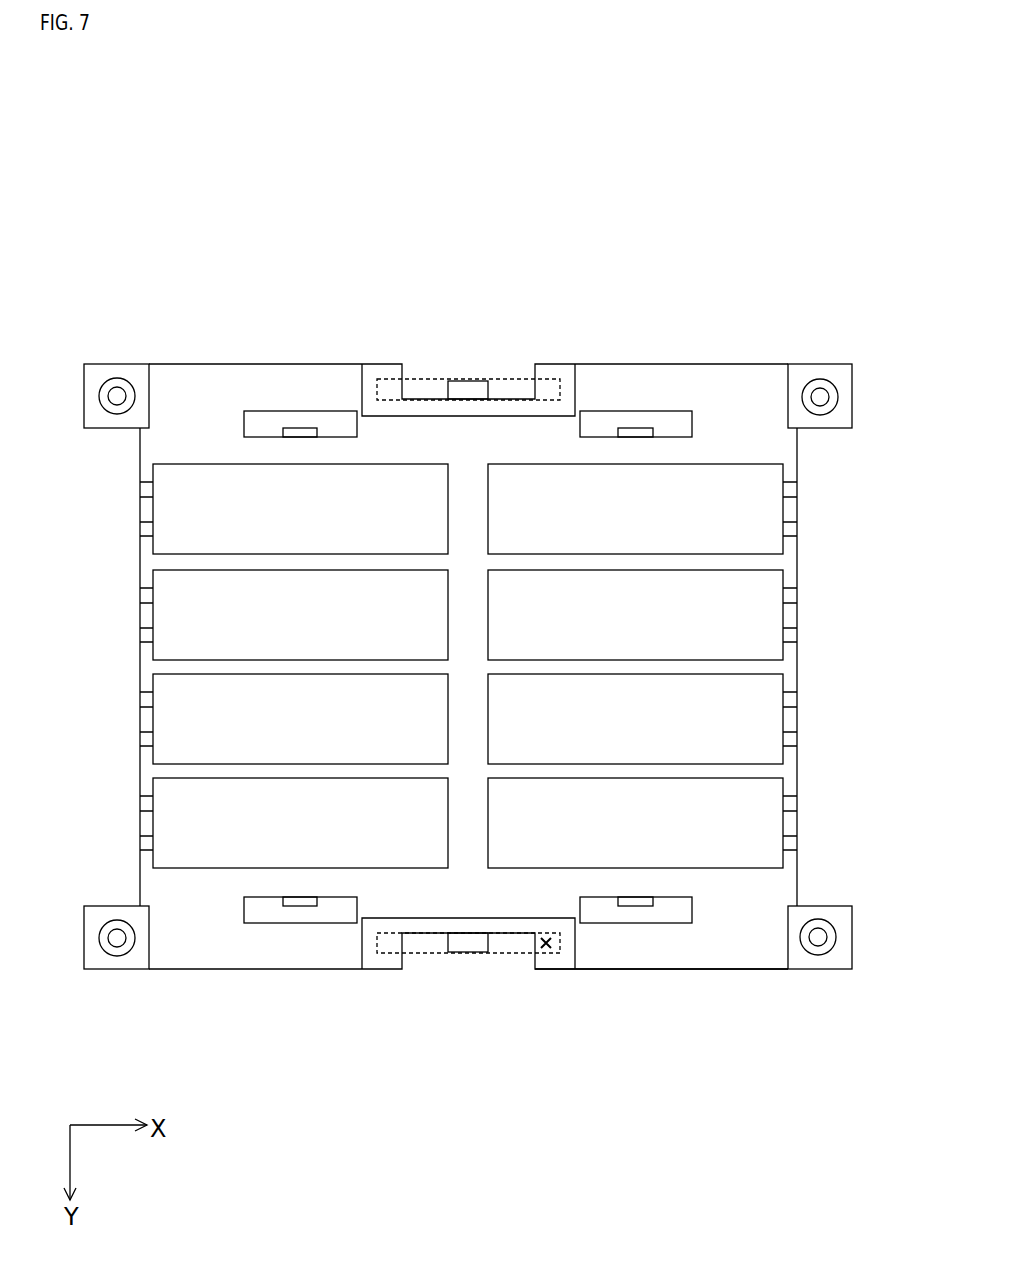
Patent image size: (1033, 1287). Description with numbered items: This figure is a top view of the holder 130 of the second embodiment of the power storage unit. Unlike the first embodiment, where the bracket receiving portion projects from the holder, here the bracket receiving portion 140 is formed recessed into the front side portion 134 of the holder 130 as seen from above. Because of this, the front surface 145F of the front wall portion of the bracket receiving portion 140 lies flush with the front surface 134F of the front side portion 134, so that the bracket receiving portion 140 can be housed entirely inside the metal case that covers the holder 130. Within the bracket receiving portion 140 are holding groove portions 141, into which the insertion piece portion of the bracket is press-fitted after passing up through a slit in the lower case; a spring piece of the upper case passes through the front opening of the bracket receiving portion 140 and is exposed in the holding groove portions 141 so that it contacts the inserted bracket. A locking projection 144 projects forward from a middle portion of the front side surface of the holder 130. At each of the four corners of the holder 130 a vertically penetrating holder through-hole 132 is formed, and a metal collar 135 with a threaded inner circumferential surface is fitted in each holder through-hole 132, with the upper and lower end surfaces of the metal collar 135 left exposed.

The holder 130 is at (508, 644).
The holder through-hole 132 is at (837, 930).
The front side portion 134 is at (750, 945).
The front surface 134F is at (685, 969).
The metal collar 135 is at (835, 940).
The bracket receiving portion 140 is at (478, 1006).
The holding groove portion 141 is at (537, 942).
The locking projection 144 is at (468, 952).
The front surface 145F is at (557, 969).